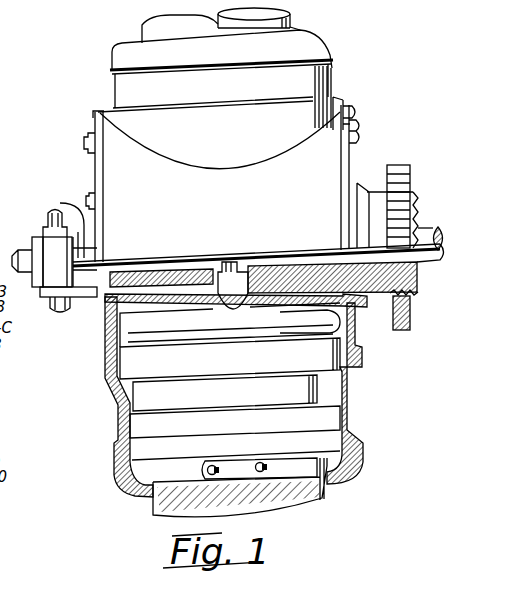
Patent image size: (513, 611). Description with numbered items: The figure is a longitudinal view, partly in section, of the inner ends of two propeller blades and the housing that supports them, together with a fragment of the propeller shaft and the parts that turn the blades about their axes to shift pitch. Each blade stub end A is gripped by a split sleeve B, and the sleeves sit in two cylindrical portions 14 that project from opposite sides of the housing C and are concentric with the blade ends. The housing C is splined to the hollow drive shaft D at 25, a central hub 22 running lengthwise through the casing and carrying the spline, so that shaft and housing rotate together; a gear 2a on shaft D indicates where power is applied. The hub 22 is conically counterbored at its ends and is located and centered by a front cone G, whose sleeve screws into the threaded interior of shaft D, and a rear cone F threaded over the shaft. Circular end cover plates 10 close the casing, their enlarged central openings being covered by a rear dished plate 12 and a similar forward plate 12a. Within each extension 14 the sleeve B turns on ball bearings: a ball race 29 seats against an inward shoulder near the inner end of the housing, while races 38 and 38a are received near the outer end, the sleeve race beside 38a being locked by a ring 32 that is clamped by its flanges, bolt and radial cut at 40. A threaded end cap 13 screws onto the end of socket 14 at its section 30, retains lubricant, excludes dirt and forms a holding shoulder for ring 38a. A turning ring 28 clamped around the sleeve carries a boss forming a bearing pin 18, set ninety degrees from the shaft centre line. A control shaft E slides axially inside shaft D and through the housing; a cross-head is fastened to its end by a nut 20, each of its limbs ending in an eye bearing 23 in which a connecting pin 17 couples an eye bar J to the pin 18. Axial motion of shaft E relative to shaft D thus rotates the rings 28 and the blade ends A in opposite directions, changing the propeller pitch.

The gear 2a is at (408, 165).
The circular end cover plate 10 is at (93, 124).
The rear dished cover plate 12 is at (357, 307).
The forward cover plate 12a is at (110, 333).
The end cover cap 13 is at (126, 61).
The cylindrical housing extension 14 is at (312, 112).
The connecting pin 17 is at (50, 228).
The bearing pin 18 is at (234, 263).
The nut 20 is at (16, 259).
The central hub 22 is at (186, 318).
The eye bearing 23 is at (43, 257).
The spline 25 is at (291, 331).
The turning ring 28 is at (142, 328).
The ball race 29 is at (133, 370).
The socket section 30 is at (118, 431).
The shoulder ring 32 is at (360, 455).
The ball race 38 is at (135, 422).
The ball race 38a is at (140, 451).
The clamping means 40 is at (240, 460).
The propeller blade stub end A is at (150, 33).
The split sleeve B is at (157, 396).
The housing C is at (115, 172).
The drive shaft D is at (418, 278).
The control shaft E is at (440, 228).
The rear cone F is at (420, 293).
The front cone G is at (107, 312).
The eye bar J is at (83, 306).